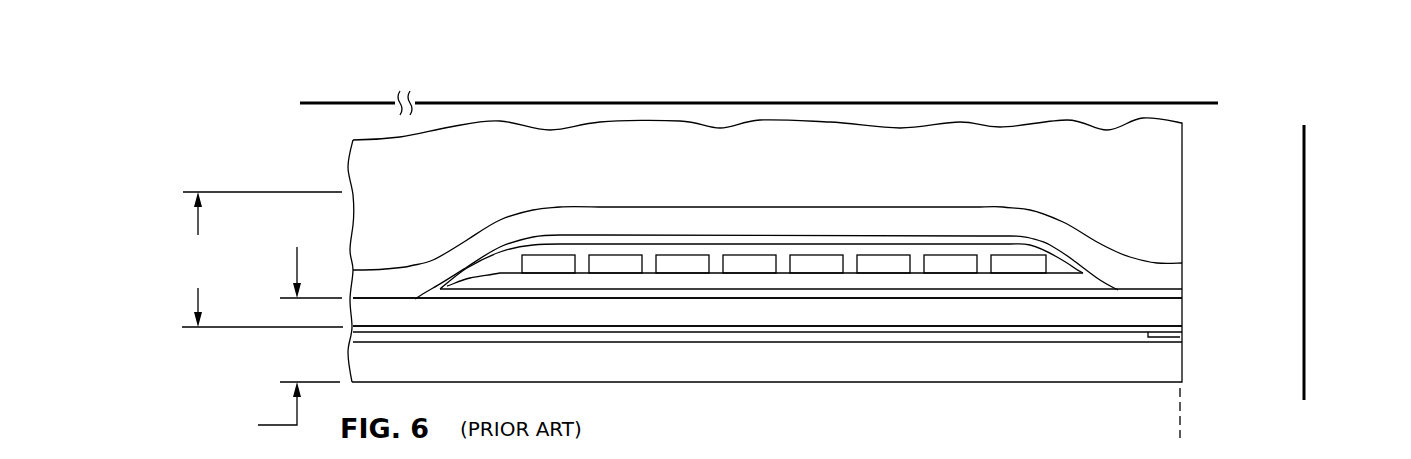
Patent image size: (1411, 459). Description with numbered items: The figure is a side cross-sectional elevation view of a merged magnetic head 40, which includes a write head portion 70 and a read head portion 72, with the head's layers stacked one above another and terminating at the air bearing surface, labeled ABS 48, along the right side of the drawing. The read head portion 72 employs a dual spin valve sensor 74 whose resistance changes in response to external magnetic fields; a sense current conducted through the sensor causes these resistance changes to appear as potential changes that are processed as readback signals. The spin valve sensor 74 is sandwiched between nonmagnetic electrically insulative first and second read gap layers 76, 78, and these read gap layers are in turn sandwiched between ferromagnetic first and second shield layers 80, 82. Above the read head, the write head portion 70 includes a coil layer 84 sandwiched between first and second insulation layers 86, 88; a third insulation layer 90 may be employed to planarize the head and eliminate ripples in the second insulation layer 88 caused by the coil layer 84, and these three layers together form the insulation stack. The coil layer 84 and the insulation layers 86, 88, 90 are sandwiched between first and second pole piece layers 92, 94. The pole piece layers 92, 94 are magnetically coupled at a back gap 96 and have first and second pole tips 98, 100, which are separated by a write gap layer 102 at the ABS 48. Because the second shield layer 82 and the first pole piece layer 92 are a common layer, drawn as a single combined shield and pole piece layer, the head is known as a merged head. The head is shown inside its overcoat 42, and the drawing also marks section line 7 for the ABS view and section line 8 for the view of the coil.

The section line 8- 8 is at (307, 60).
The section line 7- 7 is at (1318, 392).
The merged magnetic head 40 is at (328, 150).
The overcoat layer 42 is at (1163, 160).
The write head portion 70 is at (246, 259).
The read head portion 72 is at (245, 409).
The dual spin valve sensor 74 is at (1182, 338).
The first read gap layer 76 is at (835, 343).
The second read gap layer 78 is at (802, 326).
The first shield layer 80 is at (912, 365).
The second shield layer 82 is at (1018, 312).
The first pole piece layer 92 is at (1018, 312).
The coil layer 84 is at (815, 260).
The first insulation layer 86 is at (688, 283).
The second insulation layer 88 is at (1065, 263).
The third insulation layer 90 is at (588, 240).
The second pole piece layer 94 is at (932, 218).
The back gap 96 is at (388, 290).
The first pole tip 98 is at (1182, 325).
The second pole tip 100 is at (1173, 272).
The write gap layer 102 is at (1182, 292).
The air bearing surface ABS 48 is at (1180, 431).